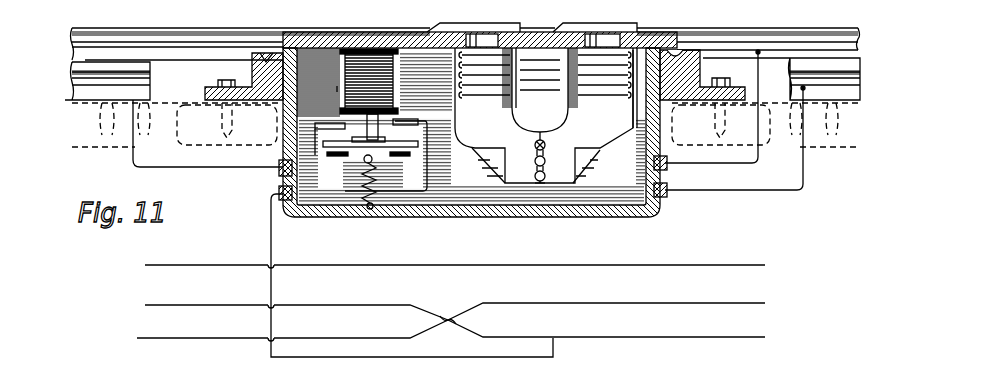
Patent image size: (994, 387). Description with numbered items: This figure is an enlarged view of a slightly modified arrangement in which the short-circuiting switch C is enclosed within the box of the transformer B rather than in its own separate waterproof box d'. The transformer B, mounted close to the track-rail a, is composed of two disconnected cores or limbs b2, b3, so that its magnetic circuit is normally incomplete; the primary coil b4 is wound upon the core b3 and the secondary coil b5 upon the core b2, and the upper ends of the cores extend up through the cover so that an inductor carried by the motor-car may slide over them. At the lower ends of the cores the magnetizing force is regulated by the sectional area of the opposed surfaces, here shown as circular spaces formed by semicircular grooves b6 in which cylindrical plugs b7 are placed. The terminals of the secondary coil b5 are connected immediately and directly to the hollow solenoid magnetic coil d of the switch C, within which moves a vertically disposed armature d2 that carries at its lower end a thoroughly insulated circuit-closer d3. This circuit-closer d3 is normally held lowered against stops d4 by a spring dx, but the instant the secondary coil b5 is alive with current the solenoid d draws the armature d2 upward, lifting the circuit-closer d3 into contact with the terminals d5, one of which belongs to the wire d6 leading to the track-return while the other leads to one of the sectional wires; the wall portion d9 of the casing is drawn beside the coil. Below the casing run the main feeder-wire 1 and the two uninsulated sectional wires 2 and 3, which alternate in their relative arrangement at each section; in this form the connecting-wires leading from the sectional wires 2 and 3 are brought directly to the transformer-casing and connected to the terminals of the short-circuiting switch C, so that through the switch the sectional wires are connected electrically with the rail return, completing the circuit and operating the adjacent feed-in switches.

The rail a is at (462, 78).
The short-circuiting switch C is at (393, 44).
The transformer B is at (544, 115).
The solenoid magnetic coil d is at (376, 95).
The waterproof box d' is at (471, 146).
The casing wall d9 is at (337, 89).
The armature d2 is at (354, 117).
The circuit-closer d3 is at (420, 144).
The stops d4 is at (410, 156).
The terminals d5 is at (386, 155).
The wire d6 is at (281, 171).
The spring dx is at (379, 182).
The core b2 is at (485, 86).
The core b3 is at (623, 92).
The primary coil b4 is at (598, 100).
The secondary coil b5 is at (518, 108).
The semicircular grooves b6 is at (547, 187).
The cylindrical plugs b7 is at (546, 146).
The main feeder-wire 1 is at (455, 257).
The uninsulated sectional wire 2 is at (455, 311).
The uninsulated sectional wire 3 is at (451, 322).